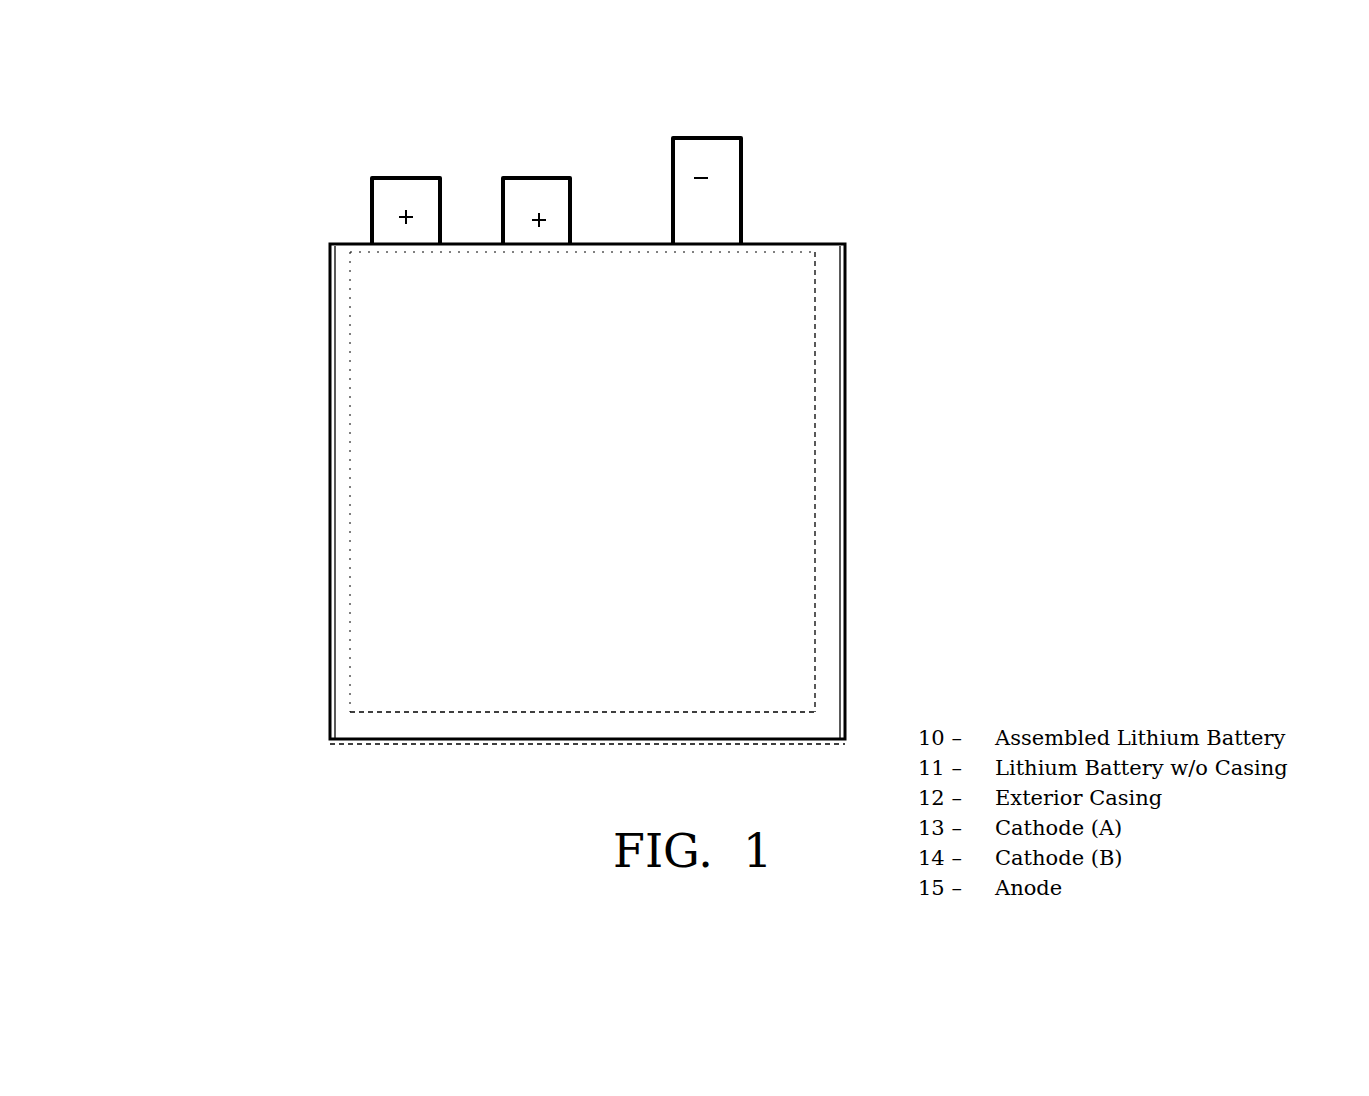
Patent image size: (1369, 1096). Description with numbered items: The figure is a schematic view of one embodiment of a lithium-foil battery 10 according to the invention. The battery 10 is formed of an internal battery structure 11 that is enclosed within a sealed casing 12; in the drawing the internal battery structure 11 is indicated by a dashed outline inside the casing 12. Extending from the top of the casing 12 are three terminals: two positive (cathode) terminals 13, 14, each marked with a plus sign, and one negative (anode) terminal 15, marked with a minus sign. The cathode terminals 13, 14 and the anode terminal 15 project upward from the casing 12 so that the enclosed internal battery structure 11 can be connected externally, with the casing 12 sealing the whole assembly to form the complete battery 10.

The lithium-foil battery 10 is at (642, 419).
The internal battery structure 11 is at (534, 530).
The sealed casing 12 is at (726, 494).
The positive (cathode) terminal 13 is at (406, 137).
The positive (cathode) terminal 14 is at (536, 137).
The negative (anode) terminal 15 is at (800, 149).